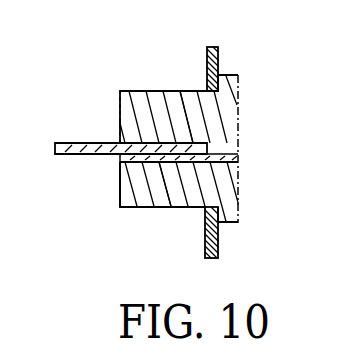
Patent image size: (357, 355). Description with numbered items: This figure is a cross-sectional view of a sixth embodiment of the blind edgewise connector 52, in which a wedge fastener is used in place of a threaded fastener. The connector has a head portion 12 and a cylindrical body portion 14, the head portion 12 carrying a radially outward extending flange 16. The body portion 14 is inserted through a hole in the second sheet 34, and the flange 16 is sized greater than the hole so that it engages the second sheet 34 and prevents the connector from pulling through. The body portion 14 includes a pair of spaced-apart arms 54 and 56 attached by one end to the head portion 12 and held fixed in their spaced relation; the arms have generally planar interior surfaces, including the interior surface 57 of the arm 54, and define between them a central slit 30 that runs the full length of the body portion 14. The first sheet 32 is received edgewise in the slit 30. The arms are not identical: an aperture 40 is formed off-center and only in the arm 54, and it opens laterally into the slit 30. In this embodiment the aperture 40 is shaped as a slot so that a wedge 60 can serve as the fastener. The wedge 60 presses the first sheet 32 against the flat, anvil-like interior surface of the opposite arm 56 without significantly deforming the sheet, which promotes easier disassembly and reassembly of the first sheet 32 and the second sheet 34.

The head portion 12 is at (240, 108).
The body portion 14 is at (118, 198).
The flange 16 is at (238, 75).
The central slit 30 is at (120, 157).
The first sheet 32 is at (93, 143).
The second sheet 34 is at (218, 57).
The aperture 40 is at (183, 155).
The blind edgewise connector 52 is at (90, 207).
The arm 54 is at (150, 196).
The arm 56 is at (155, 103).
The interior surface 57 is at (118, 143).
The wedge 60 is at (214, 152).